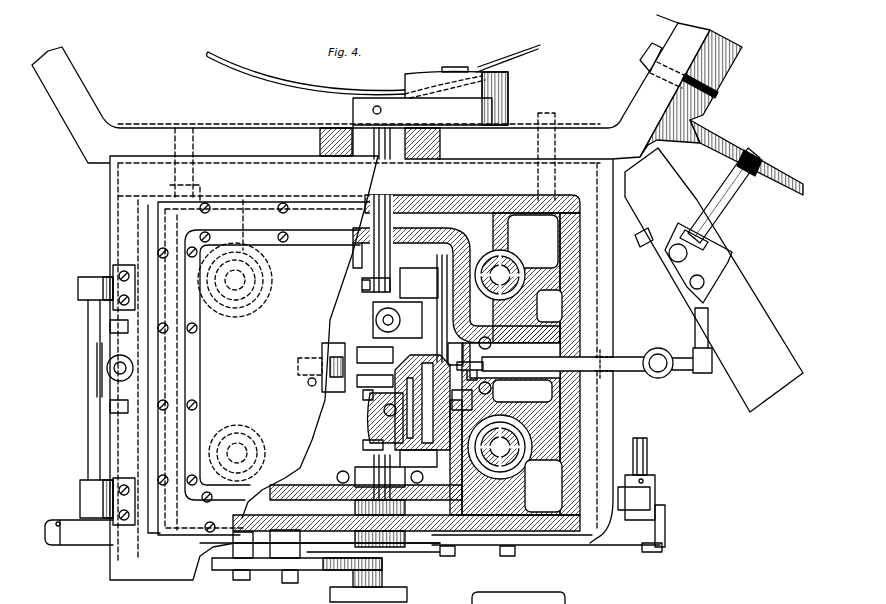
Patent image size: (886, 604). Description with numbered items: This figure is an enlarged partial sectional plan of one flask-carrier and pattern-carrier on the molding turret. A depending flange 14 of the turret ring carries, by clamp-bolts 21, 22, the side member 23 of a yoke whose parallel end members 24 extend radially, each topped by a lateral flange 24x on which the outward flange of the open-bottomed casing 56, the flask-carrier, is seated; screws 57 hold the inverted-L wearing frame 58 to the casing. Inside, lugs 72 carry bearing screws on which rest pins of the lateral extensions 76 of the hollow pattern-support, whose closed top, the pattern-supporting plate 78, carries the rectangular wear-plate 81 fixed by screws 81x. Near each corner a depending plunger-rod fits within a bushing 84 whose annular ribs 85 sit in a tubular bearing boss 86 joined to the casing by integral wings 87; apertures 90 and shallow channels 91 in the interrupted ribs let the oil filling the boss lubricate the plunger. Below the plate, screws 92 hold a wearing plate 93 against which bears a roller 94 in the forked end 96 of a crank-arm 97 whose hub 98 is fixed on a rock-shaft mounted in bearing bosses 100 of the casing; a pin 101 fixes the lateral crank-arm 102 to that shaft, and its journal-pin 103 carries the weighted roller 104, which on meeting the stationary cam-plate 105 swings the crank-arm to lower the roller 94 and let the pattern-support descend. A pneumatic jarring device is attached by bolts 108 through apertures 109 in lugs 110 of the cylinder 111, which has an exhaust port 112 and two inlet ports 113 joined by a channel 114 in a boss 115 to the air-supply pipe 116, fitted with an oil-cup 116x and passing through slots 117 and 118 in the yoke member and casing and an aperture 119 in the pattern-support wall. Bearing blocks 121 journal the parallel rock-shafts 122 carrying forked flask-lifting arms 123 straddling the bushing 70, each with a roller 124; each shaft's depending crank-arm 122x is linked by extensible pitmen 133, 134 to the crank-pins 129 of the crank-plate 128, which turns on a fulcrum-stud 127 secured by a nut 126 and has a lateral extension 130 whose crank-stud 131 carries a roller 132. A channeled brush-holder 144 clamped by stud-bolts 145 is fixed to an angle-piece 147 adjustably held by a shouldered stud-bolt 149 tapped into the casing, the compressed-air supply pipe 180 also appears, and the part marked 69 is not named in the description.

The depending flanges 14 is at (507, 96).
The clamp-bolt 21 is at (556, 146).
The clamp-bolt 22 is at (190, 176).
The side member of yoke 23 is at (740, 73).
The parallel end members of yoke 24 is at (728, 140).
The lateral flange 24x is at (613, 402).
The flask-carrier casing 56 is at (436, 199).
The screws 57 is at (288, 212).
The wearing frame 58 is at (278, 210).
The pin 69 is at (116, 375).
The bushing 70 is at (107, 360).
The lugs 72 is at (552, 325).
The lateral extensions 76 is at (498, 400).
The pattern-supporting plate 78 is at (272, 365).
The wear-plate 81 is at (328, 249).
The screws 81x is at (300, 248).
The bushing 84 is at (526, 440).
The annular bearing ribs 85 is at (515, 432).
The tubular bearing boss 86 is at (546, 467).
The wings 87 is at (493, 236).
The transverse apertures 90 is at (508, 258).
The shallow channels 91 is at (522, 265).
The screws 92 is at (306, 358).
The wearing plate 93 is at (326, 350).
The roller 94 is at (340, 362).
The forked outer end 96 is at (345, 392).
The crank-arm 97 is at (375, 367).
The hub 98 is at (362, 386).
The bearing bosses 100 is at (395, 222).
The pin 101 is at (372, 109).
The lateral crank-arm 102 is at (422, 127).
The headed journal-pin 103 is at (458, 66).
The weighted roller 104 is at (456, 98).
The stationary cam-plate 105 is at (306, 73).
The bolts 108 is at (374, 306).
The apertures 109 is at (370, 442).
The lugs 110 is at (362, 429).
The cylinder 111 is at (418, 345).
The exhaust port 112 is at (393, 419).
The inlet ports 113 is at (445, 390).
The channel 114 is at (438, 395).
The projecting boss 115 is at (462, 376).
The air-supply pipe 116 is at (503, 357).
The oil-cup 116x is at (661, 380).
The slot 117 is at (603, 357).
The slot 118 is at (575, 375).
The aperture 119 is at (503, 361).
The bearing blocks 121 is at (78, 289).
The rock-shafts 122 is at (88, 380).
The depending crank-arm 122x is at (70, 530).
The flask-lifting arms 123 is at (110, 328).
The roller 124 is at (125, 330).
The nut 126 is at (319, 500).
The fulcrum-stud 127 is at (292, 584).
The crank-plate 128 is at (259, 571).
The crank-pins 129 is at (232, 525).
The lateral extension 130 is at (383, 568).
The crank-stud 131 is at (406, 598).
The roller 132 is at (408, 590).
The extensible pitman 133 is at (85, 545).
The extensible pitman 134 is at (424, 553).
The channeled holder 144 is at (714, 280).
The stud-bolts 145 is at (636, 250).
The angle-piece 147 is at (715, 280).
The shouldered stud-bolt 149 is at (732, 195).
The compressed air supply pipe 180 is at (112, 270).